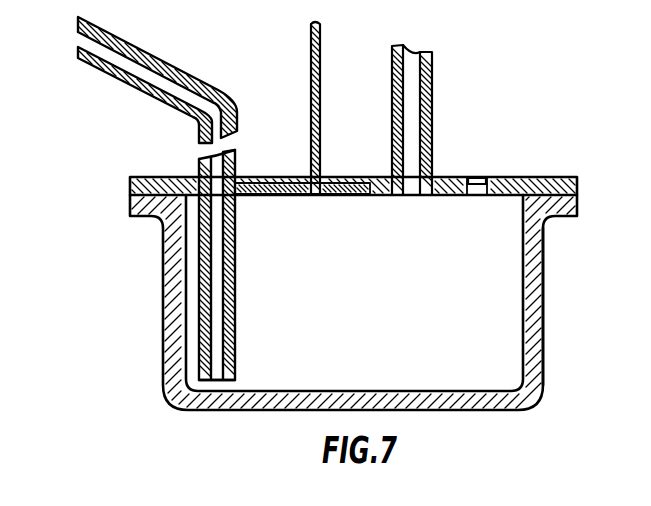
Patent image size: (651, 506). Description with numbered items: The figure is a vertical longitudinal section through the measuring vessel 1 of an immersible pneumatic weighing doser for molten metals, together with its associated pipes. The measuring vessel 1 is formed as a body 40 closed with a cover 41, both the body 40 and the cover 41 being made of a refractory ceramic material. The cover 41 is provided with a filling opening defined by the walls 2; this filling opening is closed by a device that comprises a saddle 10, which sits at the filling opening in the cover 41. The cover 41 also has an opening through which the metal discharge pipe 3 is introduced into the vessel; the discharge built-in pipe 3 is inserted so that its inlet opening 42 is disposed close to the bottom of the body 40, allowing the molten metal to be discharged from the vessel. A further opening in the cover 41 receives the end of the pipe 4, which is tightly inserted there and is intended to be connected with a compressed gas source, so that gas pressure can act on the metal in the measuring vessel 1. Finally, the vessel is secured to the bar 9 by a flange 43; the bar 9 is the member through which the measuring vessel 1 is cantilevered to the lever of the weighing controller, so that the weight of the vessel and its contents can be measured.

The measuring vessel 1 is at (510, 332).
The body 40 is at (542, 267).
The cover 41 is at (564, 177).
The flange 43 is at (287, 195).
The bar 9 is at (311, 116).
The pipe 4 is at (416, 168).
The walls of the filling opening 2 is at (480, 197).
The saddle 10 is at (467, 178).
The discharge built-in pipe 3 is at (234, 319).
The inlet opening 42 is at (212, 373).